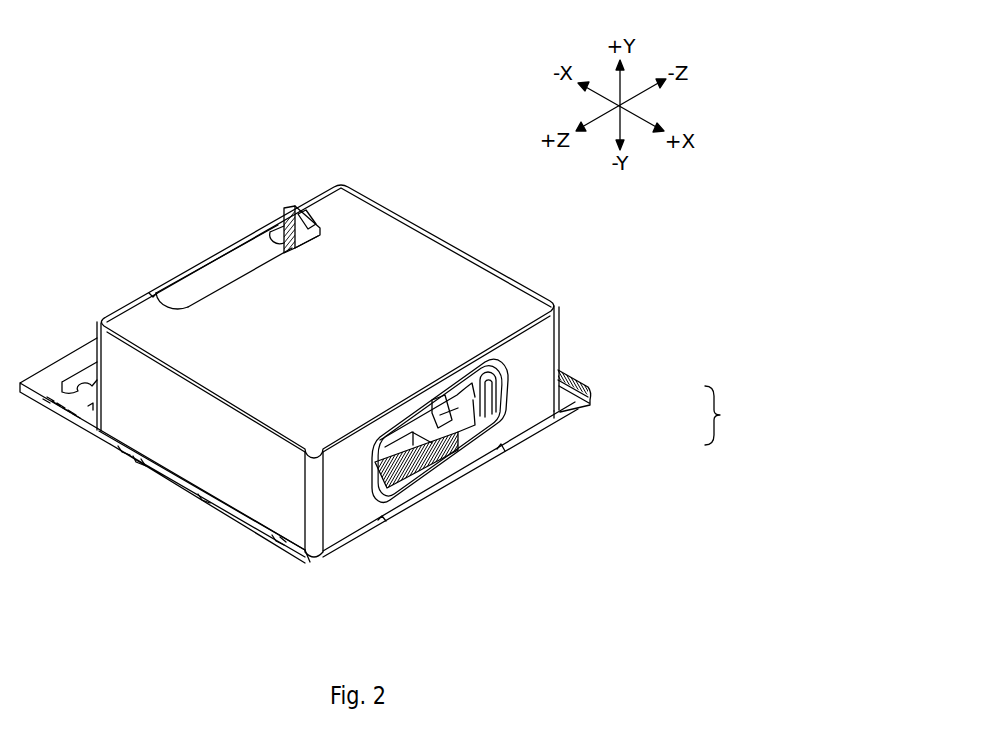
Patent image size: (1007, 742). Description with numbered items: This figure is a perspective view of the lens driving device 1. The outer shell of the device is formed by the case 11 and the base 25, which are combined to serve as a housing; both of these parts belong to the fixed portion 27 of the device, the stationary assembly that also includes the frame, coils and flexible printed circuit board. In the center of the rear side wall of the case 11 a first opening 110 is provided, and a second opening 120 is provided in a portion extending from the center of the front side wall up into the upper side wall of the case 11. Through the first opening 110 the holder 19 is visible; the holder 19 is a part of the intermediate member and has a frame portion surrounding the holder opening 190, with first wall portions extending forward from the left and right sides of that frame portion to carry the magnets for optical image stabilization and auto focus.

The lens driving device 1 is at (303, 178).
The case 11 is at (328, 371).
The second opening 120 is at (188, 306).
The first opening 110 is at (514, 396).
The holder 19 is at (530, 441).
The holder opening 190 is at (503, 435).
The base 25 is at (578, 412).
The fixed portion 27 is at (730, 415).